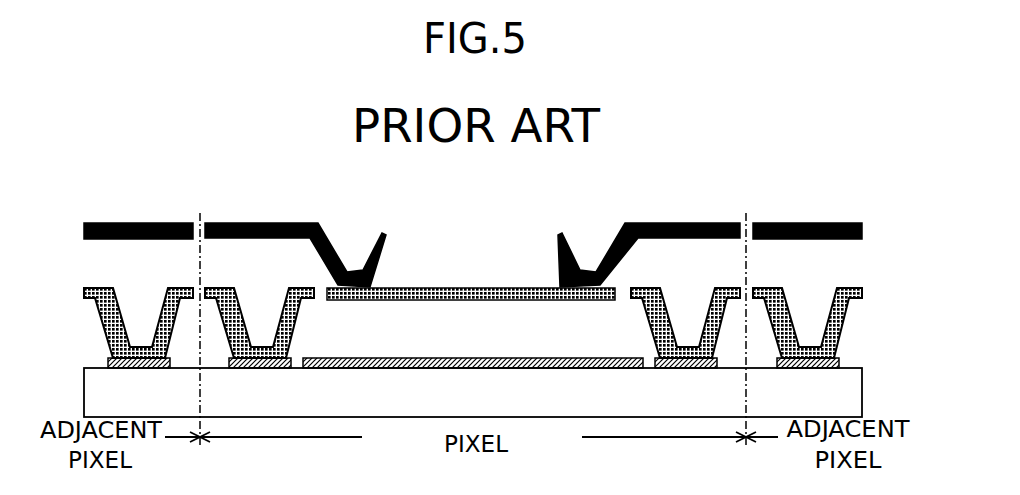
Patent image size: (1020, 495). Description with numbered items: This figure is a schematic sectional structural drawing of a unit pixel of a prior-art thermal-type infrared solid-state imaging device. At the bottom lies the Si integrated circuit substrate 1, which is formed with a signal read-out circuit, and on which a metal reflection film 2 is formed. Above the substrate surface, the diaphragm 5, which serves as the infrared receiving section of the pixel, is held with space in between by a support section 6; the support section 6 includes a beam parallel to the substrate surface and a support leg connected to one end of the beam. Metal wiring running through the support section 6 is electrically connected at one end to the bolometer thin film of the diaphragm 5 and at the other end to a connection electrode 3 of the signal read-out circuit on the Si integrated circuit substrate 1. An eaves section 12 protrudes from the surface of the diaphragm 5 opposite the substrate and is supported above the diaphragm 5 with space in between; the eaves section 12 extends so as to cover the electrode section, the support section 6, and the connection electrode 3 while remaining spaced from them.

The Si integrated circuit substrate 1 is at (372, 392).
The metal reflection film 2 is at (448, 364).
The connection electrode 3 is at (683, 330).
The diaphragm 5 is at (523, 288).
The support section 6 is at (240, 310).
The eaves section 12 is at (663, 222).